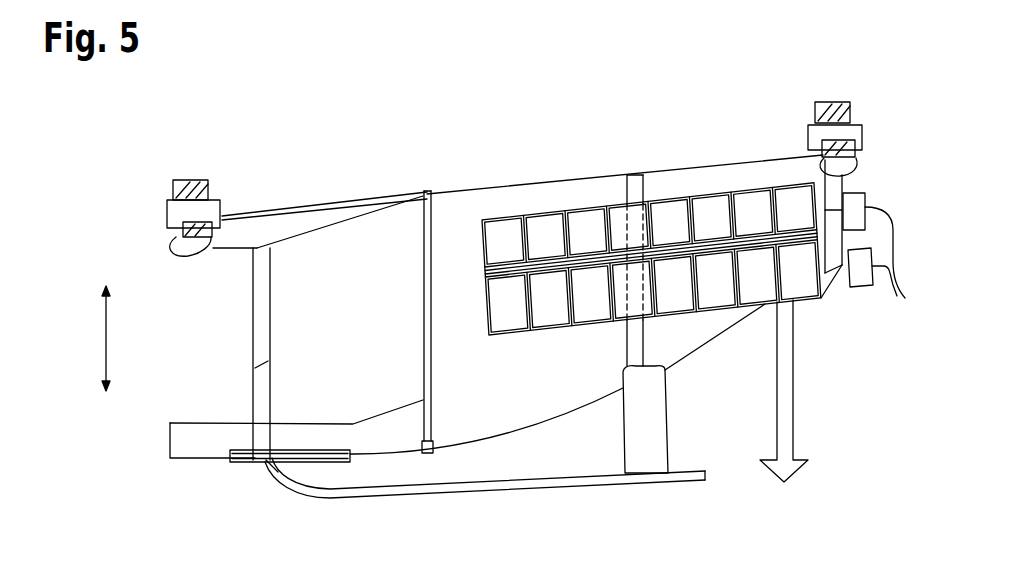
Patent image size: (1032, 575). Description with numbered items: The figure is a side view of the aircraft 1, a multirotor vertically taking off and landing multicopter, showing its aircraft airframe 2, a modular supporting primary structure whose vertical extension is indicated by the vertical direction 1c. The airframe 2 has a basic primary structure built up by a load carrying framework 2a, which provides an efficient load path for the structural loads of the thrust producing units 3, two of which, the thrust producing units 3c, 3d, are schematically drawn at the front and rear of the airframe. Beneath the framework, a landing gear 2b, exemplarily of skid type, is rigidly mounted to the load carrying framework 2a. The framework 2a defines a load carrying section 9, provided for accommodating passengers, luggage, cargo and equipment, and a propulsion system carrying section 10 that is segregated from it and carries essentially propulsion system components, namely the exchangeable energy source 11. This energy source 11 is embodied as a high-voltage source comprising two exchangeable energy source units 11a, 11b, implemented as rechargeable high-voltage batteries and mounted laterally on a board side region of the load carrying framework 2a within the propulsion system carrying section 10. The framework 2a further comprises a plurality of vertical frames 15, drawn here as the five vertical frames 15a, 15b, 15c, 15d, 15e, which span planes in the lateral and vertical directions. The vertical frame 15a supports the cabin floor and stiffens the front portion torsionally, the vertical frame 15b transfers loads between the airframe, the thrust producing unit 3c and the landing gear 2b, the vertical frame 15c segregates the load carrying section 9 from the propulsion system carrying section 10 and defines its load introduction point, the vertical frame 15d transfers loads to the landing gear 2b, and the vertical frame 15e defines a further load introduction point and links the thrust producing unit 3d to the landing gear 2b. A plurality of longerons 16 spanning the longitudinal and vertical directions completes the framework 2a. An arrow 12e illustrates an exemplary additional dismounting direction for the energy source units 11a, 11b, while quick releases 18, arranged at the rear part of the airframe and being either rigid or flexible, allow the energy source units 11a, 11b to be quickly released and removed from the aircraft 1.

The aircraft 1 is at (241, 188).
The vertical direction 1c is at (103, 338).
The aircraft airframe 2 is at (385, 187).
The load carrying framework 2a is at (165, 462).
The landing gear 2b is at (372, 492).
The thrust producing units 3 is at (167, 192).
The thrust producing unit 3c is at (160, 224).
The thrust producing unit 3d is at (806, 110).
The load carrying section 9 is at (327, 194).
The propulsion system carrying section 10 is at (539, 177).
The exchangeable energy source 11 is at (587, 200).
The exchangeable energy source unit 11a is at (477, 242).
The exchangeable energy source unit 11b is at (485, 313).
The arrow 12e is at (795, 417).
The vertical frames 15 is at (247, 342).
The vertical frame 15a is at (170, 426).
The vertical frame 15b is at (263, 277).
The vertical frame 15c is at (428, 217).
The vertical frame 15d is at (634, 181).
The vertical frame 15e is at (833, 185).
The longerons 16 is at (195, 445).
The quick releases 18 is at (882, 263).